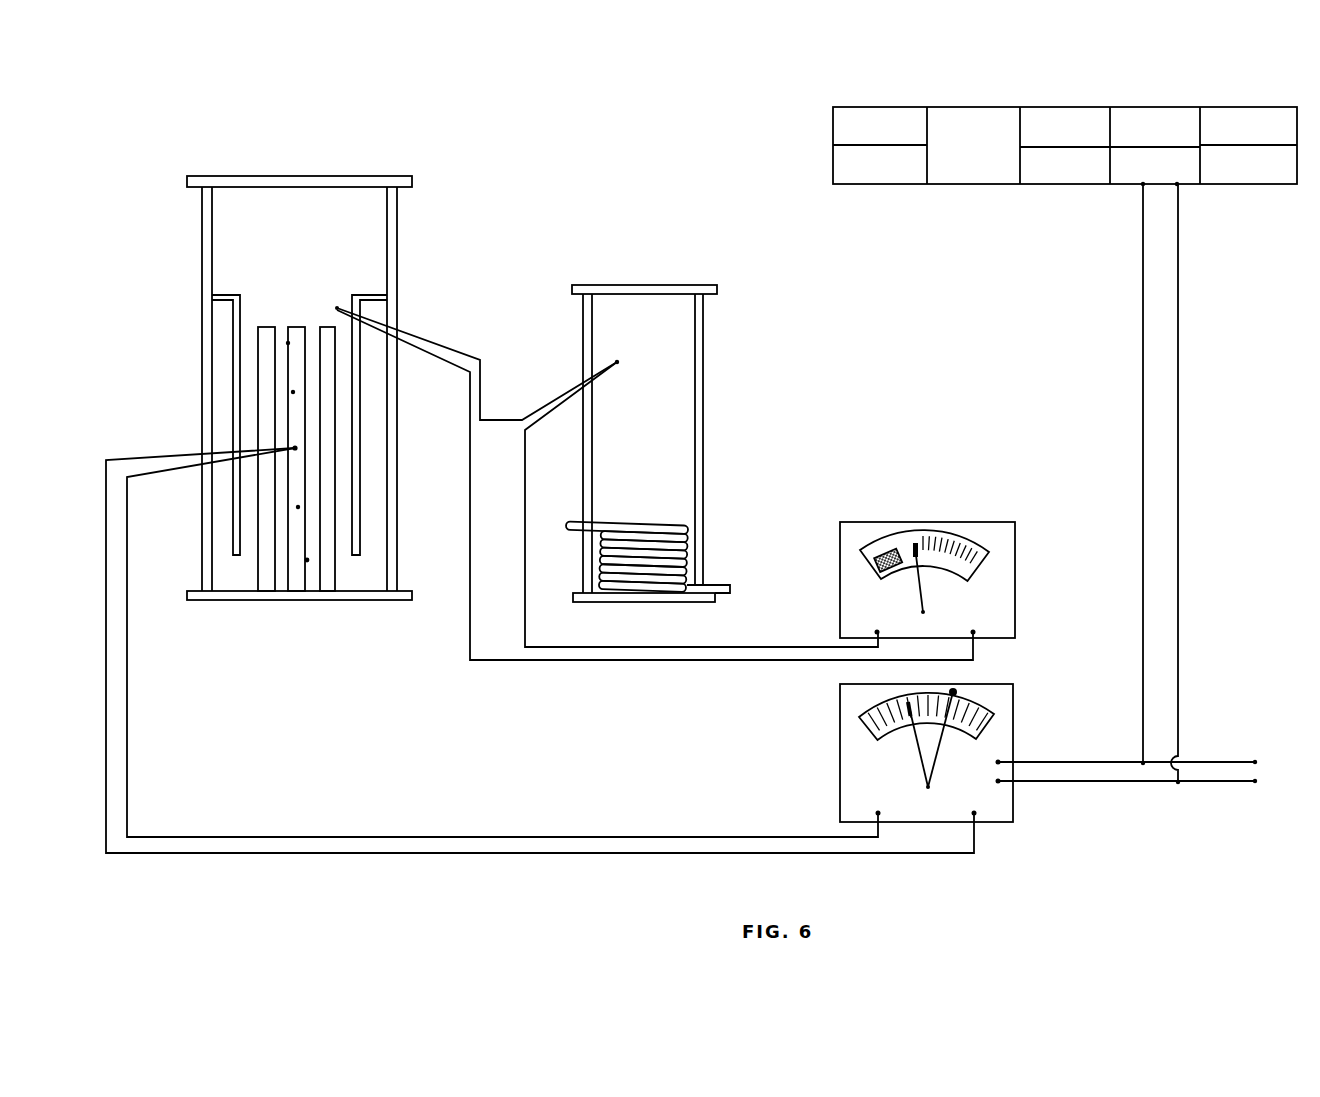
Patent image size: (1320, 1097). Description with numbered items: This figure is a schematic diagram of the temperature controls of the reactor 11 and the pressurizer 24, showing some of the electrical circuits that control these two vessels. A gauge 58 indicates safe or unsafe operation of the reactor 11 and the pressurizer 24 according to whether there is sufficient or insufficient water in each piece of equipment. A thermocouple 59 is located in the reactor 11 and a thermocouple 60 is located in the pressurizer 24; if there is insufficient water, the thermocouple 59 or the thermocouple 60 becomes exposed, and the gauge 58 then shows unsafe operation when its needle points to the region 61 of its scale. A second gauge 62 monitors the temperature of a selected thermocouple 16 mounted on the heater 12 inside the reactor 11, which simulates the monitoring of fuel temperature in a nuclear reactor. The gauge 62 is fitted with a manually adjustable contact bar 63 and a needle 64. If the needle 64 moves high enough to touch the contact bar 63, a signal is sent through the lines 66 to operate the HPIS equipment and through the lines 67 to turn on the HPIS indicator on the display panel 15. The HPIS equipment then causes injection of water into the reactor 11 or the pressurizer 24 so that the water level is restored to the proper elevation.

The reactor 11 is at (397, 258).
The heater 12 is at (325, 327).
The display panel 15 is at (1032, 107).
The thermocouple 16 is at (295, 448).
The pressurizer 24 is at (587, 318).
The gauge 58 is at (955, 565).
The thermocouple 59 is at (337, 306).
The thermocouple 60 is at (621, 364).
The region 61 is at (890, 550).
The gauge 62 is at (952, 753).
The contact bar 63 is at (933, 765).
The needle 64 is at (917, 747).
The lines 66 is at (1270, 755).
The lines 67 is at (1178, 520).